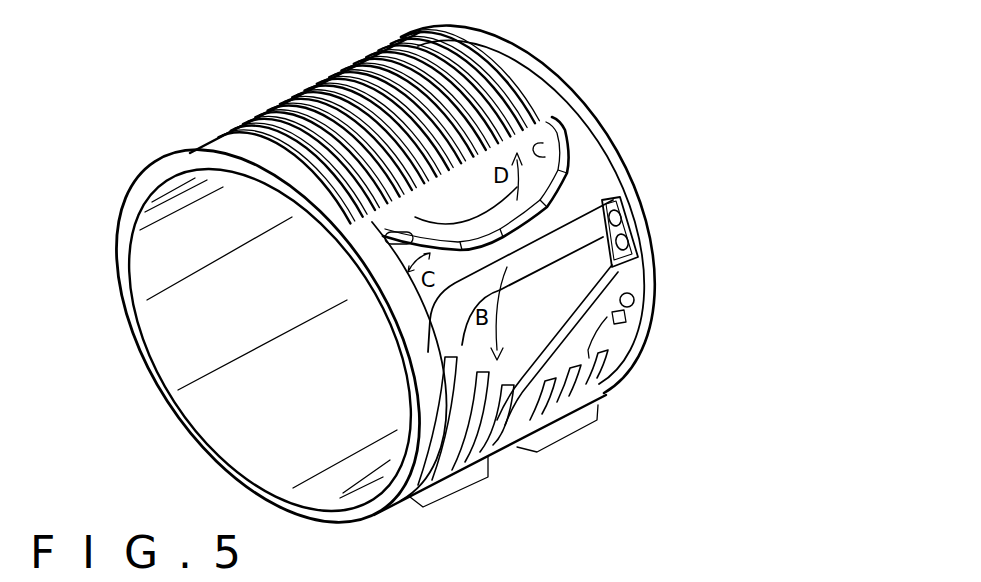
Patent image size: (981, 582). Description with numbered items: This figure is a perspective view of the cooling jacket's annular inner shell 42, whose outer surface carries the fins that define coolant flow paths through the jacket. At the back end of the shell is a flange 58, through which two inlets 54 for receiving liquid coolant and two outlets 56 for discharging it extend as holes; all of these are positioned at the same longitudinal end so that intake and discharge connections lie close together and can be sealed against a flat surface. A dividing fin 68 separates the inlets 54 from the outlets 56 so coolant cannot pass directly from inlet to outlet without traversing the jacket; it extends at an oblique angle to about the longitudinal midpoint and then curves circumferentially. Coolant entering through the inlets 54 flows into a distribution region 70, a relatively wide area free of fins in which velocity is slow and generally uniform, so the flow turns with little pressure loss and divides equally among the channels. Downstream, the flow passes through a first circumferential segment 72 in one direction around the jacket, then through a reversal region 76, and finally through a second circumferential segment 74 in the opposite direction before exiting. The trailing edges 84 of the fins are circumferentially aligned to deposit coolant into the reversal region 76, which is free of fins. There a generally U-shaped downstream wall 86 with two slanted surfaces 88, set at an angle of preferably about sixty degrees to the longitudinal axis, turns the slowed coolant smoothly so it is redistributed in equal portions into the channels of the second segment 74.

The inner shell 42 is at (530, 60).
The inlets 54 is at (627, 240).
The outlets 56 is at (636, 297).
The flange 58 is at (658, 270).
The dividing fin 68 is at (583, 297).
The distribution region 70 is at (440, 324).
The first circumferential segment 72 is at (470, 490).
The second circumferential segment 74 is at (572, 438).
The reversal region 76 is at (378, 226).
The trailing edges 84 is at (430, 187).
The downstream wall 86 is at (575, 165).
The slanted surfaces 88 is at (545, 143).